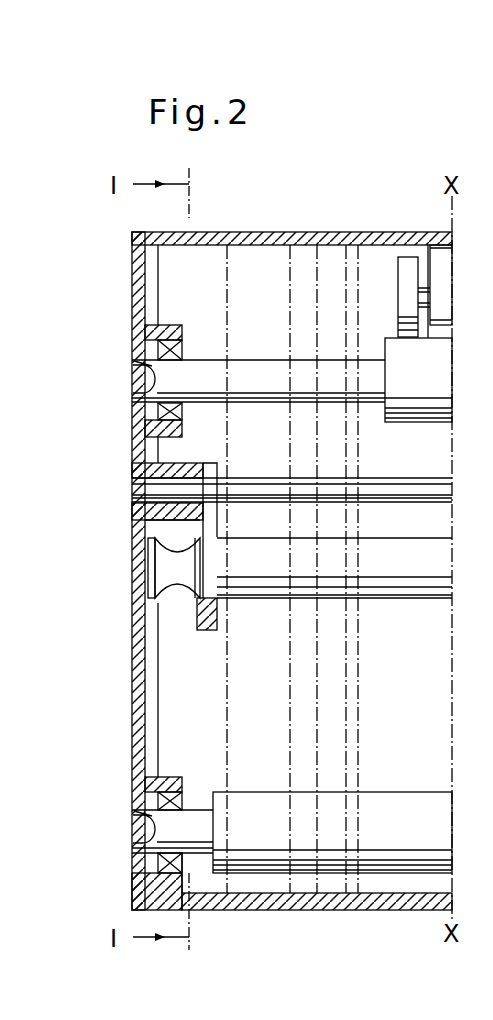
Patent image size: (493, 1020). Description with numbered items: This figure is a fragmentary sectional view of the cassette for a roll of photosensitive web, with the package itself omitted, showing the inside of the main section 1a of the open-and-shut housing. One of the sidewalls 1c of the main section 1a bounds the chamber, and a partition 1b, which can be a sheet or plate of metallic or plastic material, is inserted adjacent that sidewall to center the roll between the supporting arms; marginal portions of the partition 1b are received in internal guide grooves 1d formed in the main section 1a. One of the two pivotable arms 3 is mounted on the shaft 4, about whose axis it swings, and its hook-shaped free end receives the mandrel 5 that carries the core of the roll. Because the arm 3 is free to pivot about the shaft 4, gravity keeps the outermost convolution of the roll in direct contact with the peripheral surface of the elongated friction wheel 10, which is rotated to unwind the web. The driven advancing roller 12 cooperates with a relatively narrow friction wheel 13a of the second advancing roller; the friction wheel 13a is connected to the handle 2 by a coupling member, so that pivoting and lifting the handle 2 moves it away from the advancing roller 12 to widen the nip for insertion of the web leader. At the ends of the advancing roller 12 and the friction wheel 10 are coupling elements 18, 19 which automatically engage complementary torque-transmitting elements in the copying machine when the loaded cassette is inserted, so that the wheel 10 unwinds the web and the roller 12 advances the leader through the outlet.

The main section 1a is at (472, 558).
The partition 1b is at (253, 569).
The sidewall 1c is at (104, 571).
The internal guide groove 1d is at (365, 569).
The handle 2 is at (461, 286).
The pivotable arm 3 is at (267, 538).
The shaft 4 is at (147, 544).
The mandrel 5 is at (334, 599).
The friction wheel 10 is at (332, 799).
The advancing roller 12 is at (417, 405).
The friction wheel 13a is at (397, 256).
The coupling element 18 is at (224, 368).
The coupling element 19 is at (138, 822).